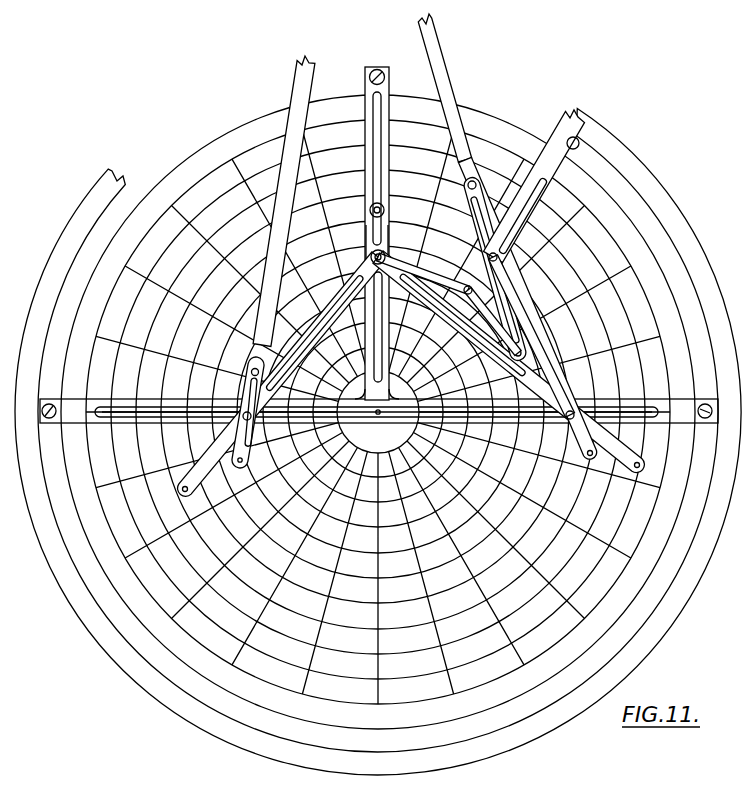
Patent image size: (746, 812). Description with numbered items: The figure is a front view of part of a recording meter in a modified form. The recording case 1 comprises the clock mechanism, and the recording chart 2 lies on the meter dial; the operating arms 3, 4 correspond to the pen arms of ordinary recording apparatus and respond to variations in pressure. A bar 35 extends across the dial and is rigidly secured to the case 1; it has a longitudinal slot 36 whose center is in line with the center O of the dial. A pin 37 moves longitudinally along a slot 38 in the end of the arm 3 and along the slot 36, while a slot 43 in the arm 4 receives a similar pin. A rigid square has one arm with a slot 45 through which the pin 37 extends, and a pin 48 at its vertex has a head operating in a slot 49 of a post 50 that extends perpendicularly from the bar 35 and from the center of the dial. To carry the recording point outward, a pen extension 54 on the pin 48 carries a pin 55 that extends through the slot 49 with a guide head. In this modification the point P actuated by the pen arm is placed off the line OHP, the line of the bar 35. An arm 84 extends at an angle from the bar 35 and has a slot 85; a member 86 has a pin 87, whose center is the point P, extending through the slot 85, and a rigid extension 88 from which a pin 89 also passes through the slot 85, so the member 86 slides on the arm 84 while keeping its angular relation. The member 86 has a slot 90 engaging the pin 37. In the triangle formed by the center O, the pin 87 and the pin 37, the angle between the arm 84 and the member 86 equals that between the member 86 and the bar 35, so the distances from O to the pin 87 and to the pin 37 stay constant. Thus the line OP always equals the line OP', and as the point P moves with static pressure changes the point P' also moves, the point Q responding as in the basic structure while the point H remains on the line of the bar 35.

The recording case 1 is at (80, 594).
The recording chart 2 is at (218, 650).
The operating arm 3 is at (447, 100).
The operating arm 4 is at (300, 94).
The bar 35 is at (532, 424).
The slot 36 is at (490, 425).
The pin 37 is at (573, 411).
The slot 38 is at (476, 188).
The slot 43 is at (248, 371).
The slot 45 is at (447, 391).
The pin 48 is at (386, 256).
The slot 49 is at (383, 195).
The post 50 is at (366, 152).
The pen extension 54 is at (372, 236).
The pin 55 is at (383, 212).
The arm 84 is at (553, 180).
The slot 85 is at (523, 185).
The member 86 is at (530, 352).
The pin 87 is at (503, 258).
The rigid extension 88 is at (480, 268).
The pin 89 is at (465, 288).
The slot 90 is at (548, 366).
The point H is at (262, 434).
The point P is at (511, 266).
The point P' is at (559, 430).
The point Q is at (372, 255).
The center O is at (378, 415).